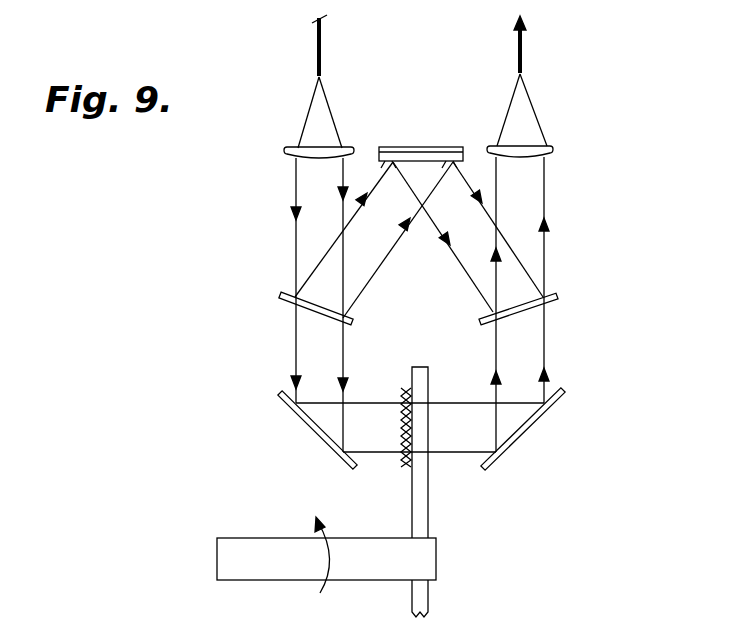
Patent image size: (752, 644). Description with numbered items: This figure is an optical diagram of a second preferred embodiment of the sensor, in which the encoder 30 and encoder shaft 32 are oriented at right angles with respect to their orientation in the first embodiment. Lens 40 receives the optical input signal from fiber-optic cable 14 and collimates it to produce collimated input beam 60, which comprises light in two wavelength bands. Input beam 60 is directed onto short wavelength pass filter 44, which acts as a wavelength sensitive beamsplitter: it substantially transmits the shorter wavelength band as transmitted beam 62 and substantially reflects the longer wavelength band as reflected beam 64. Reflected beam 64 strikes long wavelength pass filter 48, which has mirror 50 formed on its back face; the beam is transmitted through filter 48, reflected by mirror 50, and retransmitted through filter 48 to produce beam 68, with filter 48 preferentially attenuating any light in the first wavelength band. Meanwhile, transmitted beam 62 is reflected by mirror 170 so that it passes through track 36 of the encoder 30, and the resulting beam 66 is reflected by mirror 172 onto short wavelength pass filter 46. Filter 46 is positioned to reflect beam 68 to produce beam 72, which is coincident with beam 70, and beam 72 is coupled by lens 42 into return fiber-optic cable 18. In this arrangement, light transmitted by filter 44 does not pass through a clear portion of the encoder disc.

The fiber-optic cable 14 is at (318, 48).
The return fiber-optic cable 18 is at (522, 46).
The encoder 30 is at (430, 506).
The encoder shaft 32 is at (238, 537).
The track 36 is at (402, 443).
The lens 40 is at (284, 151).
The lens 42 is at (553, 150).
The short wavelength pass filter 44 is at (283, 297).
The short wavelength pass filter 46 is at (558, 296).
The long wavelength pass filter 48 is at (378, 156).
The mirror 50 is at (440, 147).
The collimated input beam 60 is at (293, 190).
The transmitted beam 62 is at (293, 333).
The reflected beam 64 is at (378, 268).
The beam 66 is at (445, 402).
The beam 68 is at (480, 292).
The beam 70 is at (546, 197).
The beam 72 is at (585, 280).
The mirror 170 is at (292, 410).
The mirror 172 is at (538, 410).